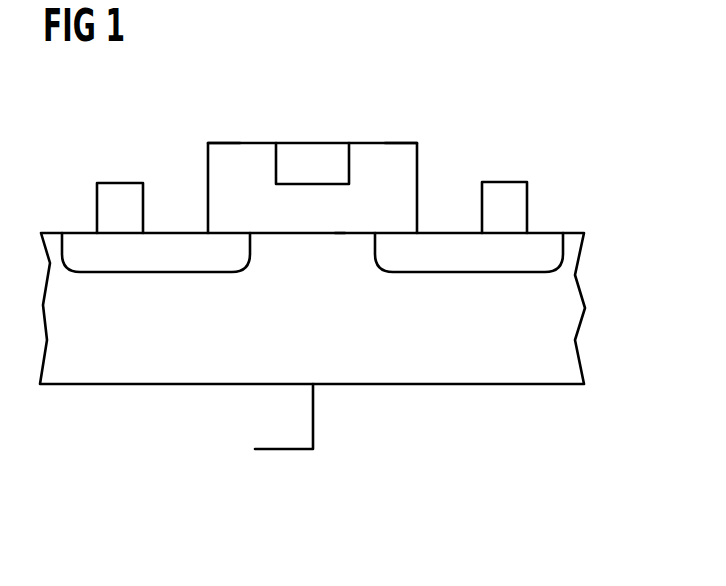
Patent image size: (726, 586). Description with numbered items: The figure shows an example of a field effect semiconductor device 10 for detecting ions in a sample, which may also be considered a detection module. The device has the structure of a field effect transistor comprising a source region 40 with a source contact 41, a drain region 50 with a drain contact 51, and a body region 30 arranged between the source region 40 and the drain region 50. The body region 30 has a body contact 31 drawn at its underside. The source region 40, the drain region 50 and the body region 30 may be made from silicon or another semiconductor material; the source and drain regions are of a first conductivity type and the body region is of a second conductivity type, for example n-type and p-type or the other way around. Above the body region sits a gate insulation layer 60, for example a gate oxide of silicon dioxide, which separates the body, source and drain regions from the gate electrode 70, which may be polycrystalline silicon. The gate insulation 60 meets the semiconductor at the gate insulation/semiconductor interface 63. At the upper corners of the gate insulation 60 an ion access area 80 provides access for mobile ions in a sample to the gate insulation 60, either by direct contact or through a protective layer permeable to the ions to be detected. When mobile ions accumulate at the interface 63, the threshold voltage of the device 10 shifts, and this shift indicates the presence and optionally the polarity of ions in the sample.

The field effect semiconductor device 10 is at (528, 88).
The body region 30 is at (572, 326).
The body contact 31 is at (315, 416).
The source region 40 is at (178, 243).
The source contact 41 is at (106, 208).
The drain region 50 is at (461, 242).
The drain contact 51 is at (519, 208).
The gate insulation layer 60 is at (411, 162).
The gate insulation/semiconductor interface 63 is at (340, 231).
The gate electrode 70 is at (312, 152).
The ion access area 80 is at (243, 136).